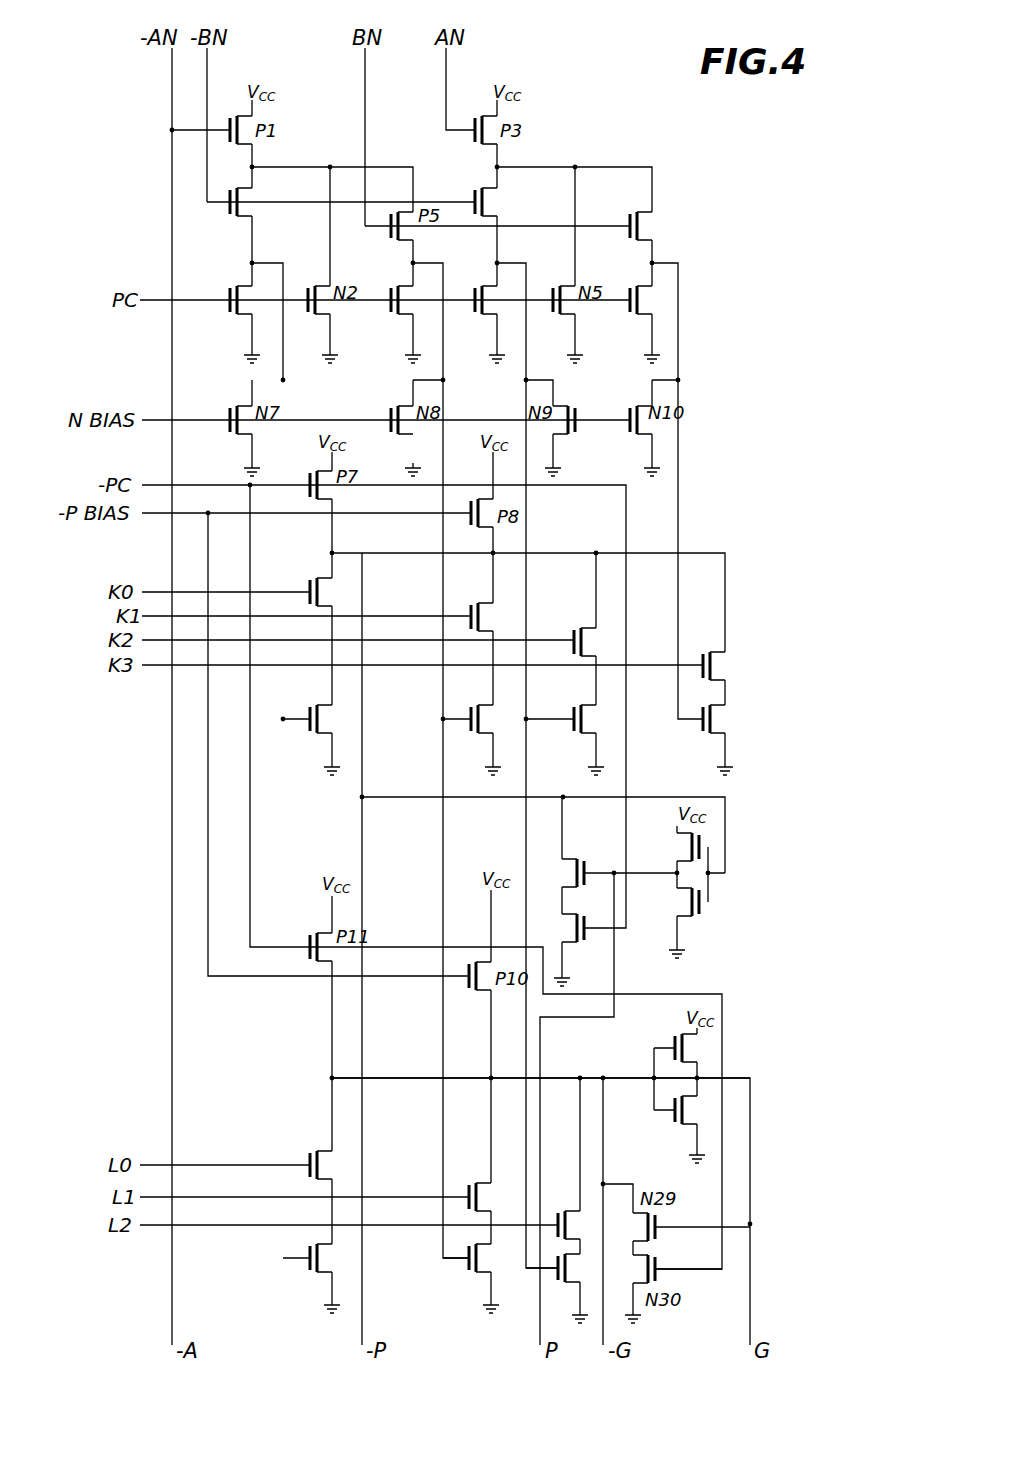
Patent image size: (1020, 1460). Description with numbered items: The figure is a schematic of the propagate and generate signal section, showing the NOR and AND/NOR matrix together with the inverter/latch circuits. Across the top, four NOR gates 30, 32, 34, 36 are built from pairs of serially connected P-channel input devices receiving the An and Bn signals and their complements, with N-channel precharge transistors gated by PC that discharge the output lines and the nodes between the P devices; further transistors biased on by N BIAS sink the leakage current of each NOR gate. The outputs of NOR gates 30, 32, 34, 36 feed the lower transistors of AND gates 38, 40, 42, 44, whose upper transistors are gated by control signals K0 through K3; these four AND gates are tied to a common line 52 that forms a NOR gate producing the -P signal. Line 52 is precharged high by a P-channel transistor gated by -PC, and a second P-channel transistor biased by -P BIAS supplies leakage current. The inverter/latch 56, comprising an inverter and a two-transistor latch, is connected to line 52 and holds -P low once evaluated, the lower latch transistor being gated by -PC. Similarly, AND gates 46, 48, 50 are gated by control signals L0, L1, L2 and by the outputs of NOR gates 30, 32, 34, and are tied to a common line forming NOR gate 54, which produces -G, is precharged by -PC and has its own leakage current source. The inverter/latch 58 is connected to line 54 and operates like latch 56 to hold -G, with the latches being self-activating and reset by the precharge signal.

The NOR gate 30 is at (237, 258).
The NOR gate 32 is at (396, 264).
The NOR gate 34 is at (486, 265).
The NOR gate 36 is at (632, 265).
The AND gate 38 is at (318, 561).
The AND gate 40 is at (485, 588).
The AND gate 42 is at (584, 604).
The AND gate 44 is at (711, 628).
The AND gate 46 is at (273, 1150).
The AND gate 48 is at (439, 1183).
The AND gate 50 is at (571, 1170).
The common line (NOR gate) 52 is at (410, 566).
The common line (NOR gate) 54 is at (416, 1076).
The inverter/latch 56 is at (616, 851).
The inverter/latch 58 is at (642, 1062).